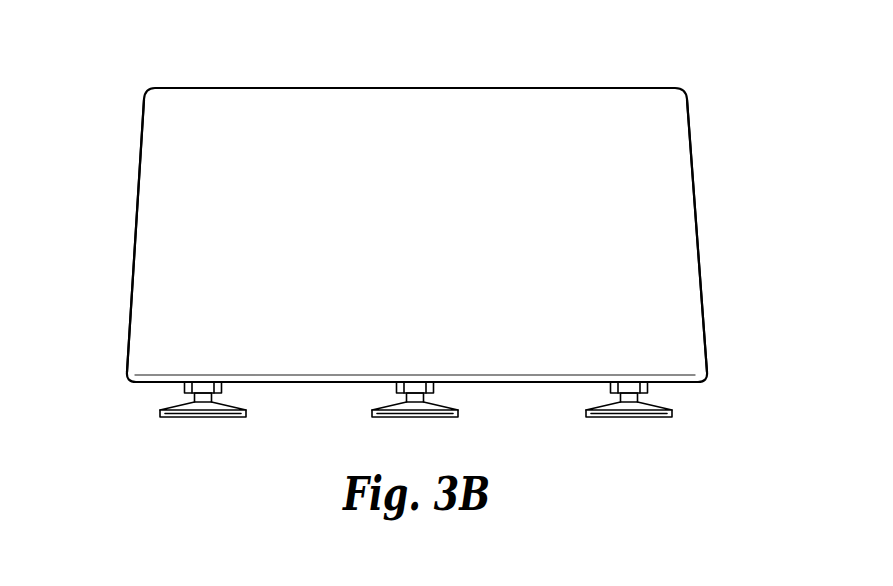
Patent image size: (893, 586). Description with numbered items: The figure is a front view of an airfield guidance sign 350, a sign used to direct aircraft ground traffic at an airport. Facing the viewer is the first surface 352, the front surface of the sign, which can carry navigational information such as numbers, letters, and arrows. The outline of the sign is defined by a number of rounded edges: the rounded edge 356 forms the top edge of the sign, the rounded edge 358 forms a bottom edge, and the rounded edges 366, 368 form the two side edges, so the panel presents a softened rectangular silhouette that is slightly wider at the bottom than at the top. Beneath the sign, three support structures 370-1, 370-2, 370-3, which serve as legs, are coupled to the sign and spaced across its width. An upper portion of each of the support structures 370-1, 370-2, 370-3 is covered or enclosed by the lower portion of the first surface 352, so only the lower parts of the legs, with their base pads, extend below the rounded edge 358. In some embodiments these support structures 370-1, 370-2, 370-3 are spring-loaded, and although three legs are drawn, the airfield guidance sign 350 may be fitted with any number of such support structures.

The airfield guidance sign 350 is at (116, 46).
The first surface 352 is at (362, 181).
The rounded edge 356 is at (445, 88).
The rounded edge 358 is at (127, 380).
The rounded edge 366 is at (136, 219).
The rounded edge 368 is at (696, 221).
The support structure 370-1 is at (203, 405).
The support structure 370-2 is at (415, 405).
The support structure 370-3 is at (629, 405).